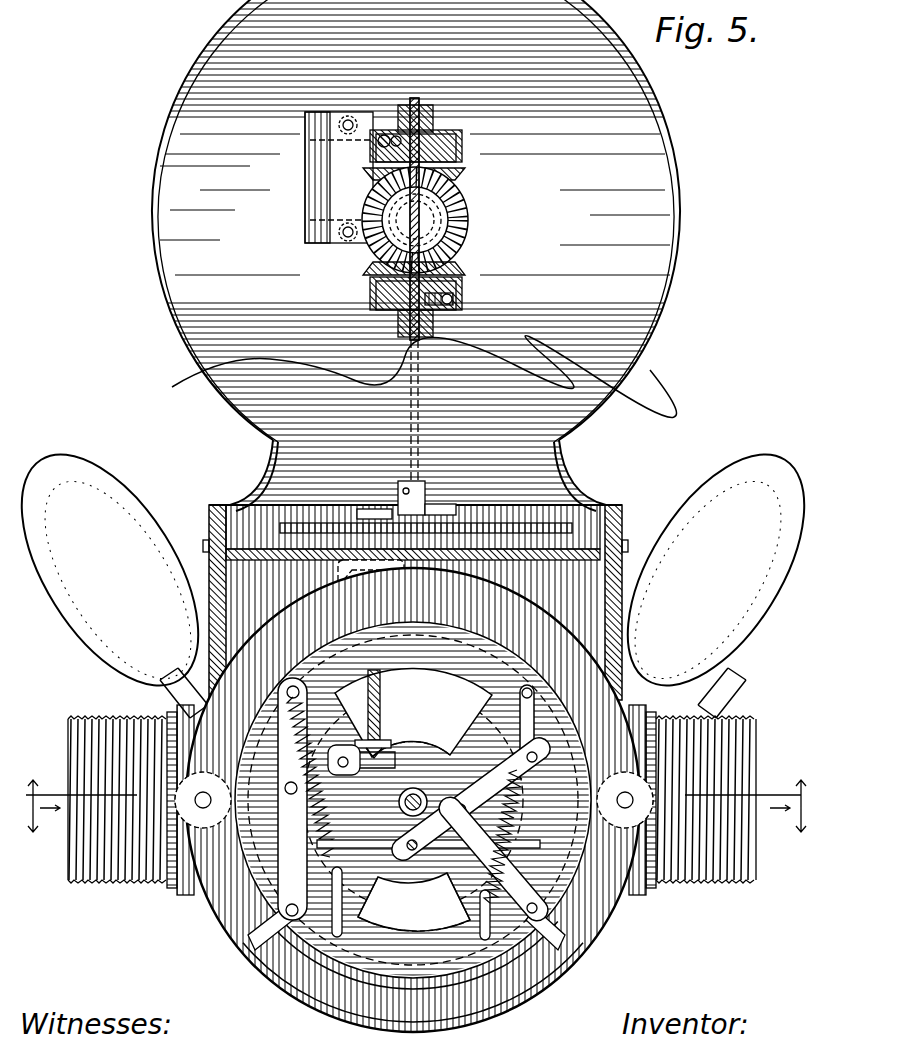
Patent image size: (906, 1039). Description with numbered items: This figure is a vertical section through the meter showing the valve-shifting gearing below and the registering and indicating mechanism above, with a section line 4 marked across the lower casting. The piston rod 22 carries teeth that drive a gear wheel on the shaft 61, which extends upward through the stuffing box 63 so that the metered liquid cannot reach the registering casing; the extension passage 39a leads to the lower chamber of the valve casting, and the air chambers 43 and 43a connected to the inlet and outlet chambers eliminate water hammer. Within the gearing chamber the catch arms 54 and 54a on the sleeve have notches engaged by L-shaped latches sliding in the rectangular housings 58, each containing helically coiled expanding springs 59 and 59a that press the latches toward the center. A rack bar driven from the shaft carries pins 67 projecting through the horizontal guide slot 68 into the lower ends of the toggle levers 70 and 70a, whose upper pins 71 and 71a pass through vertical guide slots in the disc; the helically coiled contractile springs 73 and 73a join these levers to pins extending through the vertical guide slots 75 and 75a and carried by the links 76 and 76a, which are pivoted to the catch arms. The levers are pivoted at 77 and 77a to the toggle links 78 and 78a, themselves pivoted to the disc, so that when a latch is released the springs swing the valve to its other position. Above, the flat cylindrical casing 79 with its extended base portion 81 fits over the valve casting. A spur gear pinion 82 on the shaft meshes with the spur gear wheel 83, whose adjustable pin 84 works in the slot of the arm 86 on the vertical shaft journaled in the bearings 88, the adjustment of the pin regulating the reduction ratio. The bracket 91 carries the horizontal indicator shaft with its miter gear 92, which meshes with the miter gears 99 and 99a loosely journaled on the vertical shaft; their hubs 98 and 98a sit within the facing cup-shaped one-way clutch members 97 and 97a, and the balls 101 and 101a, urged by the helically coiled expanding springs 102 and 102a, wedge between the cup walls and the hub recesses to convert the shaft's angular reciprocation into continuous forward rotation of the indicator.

The section line 4- 4 is at (412, 806).
The piston rod 22 is at (413, 794).
The extension passage 39a is at (475, 1015).
The air chamber 43 is at (716, 571).
The air chamber 43a is at (117, 571).
The catch arm 54 is at (413, 713).
The catch arm 54a is at (433, 759).
The rectangular housing 58 is at (190, 935).
The helically coiled expanding spring 59 is at (198, 894).
The helically coiled expanding spring 59a is at (622, 892).
The shaft 61 is at (382, 705).
The stuffing box 63 is at (340, 585).
The pin 67 is at (410, 340).
The horizontal guide slot 68 is at (414, 902).
The toggle lever 70 is at (338, 758).
The toggle lever 70a is at (530, 752).
The pin 71 is at (283, 692).
The pin 71a is at (534, 700).
The helically coiled contractile spring 73 is at (292, 730).
The helically coiled contractile spring 73a is at (522, 776).
The vertical guide slot 75 is at (379, 895).
The vertical guide slot 75a is at (414, 922).
The link 76 is at (392, 750).
The link 76a is at (446, 896).
The pivot 77 is at (278, 795).
The pivot 77a is at (465, 805).
The toggle link 78 is at (255, 892).
The toggle link 78a is at (542, 905).
The casing 79 is at (420, 255).
The extended base portion 81 is at (578, 498).
The spur gear pinion 82 is at (360, 509).
The spur gear wheel 83 is at (528, 523).
The pin 84 is at (422, 495).
The arm 86 is at (440, 506).
The bearing 88 is at (432, 108).
The bracket 91 is at (339, 177).
The miter gear 92 is at (468, 228).
The cup-shaped one-way clutch member 97 is at (465, 162).
The cup-shaped one-way clutch member 97a is at (462, 292).
The hub 98 is at (462, 140).
The hub 98a is at (370, 292).
The miter gear 99 is at (468, 174).
The miter gear 99a is at (365, 268).
The ball 101 is at (397, 134).
The ball 101a is at (452, 300).
The helically coiled expanding spring 102 is at (382, 136).
The helically coiled expanding spring 102a is at (442, 306).